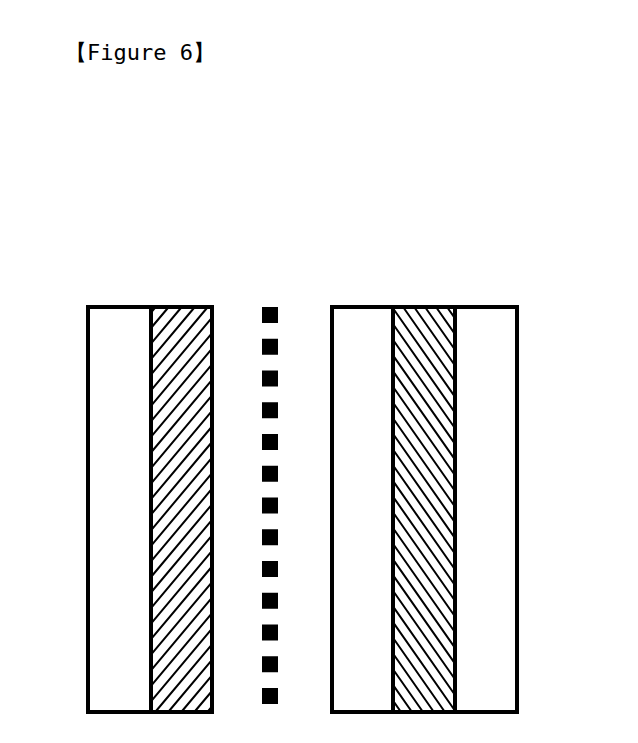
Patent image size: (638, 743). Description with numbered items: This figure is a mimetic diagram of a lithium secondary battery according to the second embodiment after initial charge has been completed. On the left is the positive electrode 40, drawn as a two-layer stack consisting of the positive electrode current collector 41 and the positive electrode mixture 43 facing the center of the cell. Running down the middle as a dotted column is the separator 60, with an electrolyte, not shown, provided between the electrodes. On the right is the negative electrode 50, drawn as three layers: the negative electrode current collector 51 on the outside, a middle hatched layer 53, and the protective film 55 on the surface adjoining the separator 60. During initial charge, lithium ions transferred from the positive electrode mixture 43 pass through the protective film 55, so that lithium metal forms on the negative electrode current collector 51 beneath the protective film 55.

The positive electrode 40 is at (128, 161).
The positive electrode current collector 41 is at (120, 305).
The positive electrode mixture 43 is at (180, 305).
The negative electrode 50 is at (362, 161).
The negative electrode current collector 51 is at (487, 305).
The positive electrode active material layer 53 is at (425, 305).
The protective film 55 is at (365, 305).
The separator 60 is at (273, 307).